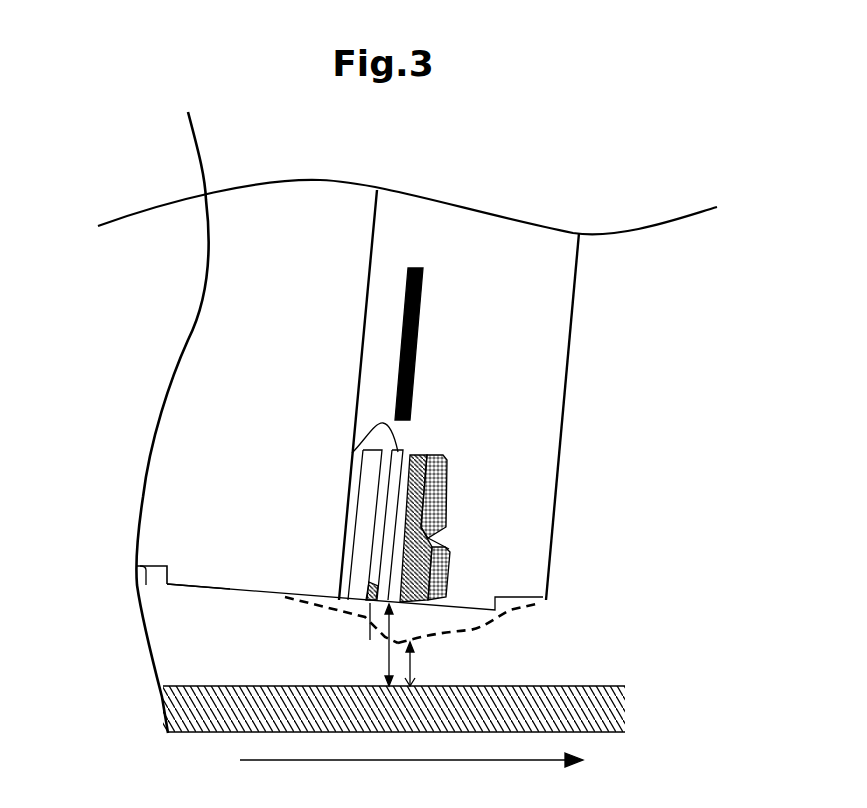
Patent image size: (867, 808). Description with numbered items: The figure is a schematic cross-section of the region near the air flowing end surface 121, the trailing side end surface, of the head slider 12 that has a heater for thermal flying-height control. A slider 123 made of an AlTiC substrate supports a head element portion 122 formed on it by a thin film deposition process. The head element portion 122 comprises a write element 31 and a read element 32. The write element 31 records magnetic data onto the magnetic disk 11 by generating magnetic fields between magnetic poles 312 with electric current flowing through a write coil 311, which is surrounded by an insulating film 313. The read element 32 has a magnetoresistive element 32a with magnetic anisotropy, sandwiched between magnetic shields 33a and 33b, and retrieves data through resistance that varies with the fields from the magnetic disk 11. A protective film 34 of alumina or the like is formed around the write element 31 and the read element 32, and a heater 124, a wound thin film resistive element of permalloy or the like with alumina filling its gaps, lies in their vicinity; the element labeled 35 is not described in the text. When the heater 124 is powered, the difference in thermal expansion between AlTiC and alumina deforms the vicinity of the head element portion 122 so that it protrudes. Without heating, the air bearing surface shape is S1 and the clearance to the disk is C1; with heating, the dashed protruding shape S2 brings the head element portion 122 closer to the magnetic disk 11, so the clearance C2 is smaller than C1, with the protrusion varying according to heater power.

The magnetic disk 11 is at (565, 685).
The head slider 12 is at (441, 182).
The air flowing end surface 121 is at (577, 307).
The head element portion 122 is at (612, 421).
The slider 123 is at (136, 579).
The heater 124 is at (413, 355).
The write element 31 is at (549, 528).
The write coil 311 is at (448, 466).
The magnetic poles 312 is at (448, 567).
The insulating film 313 is at (448, 500).
The read element 32 is at (357, 611).
The magnetoresistive element 32a is at (370, 640).
The magnetic shield 33a is at (352, 453).
The magnetic shield 33b is at (359, 470).
The protective film 34 is at (384, 260).
The bottom surface 35 is at (198, 594).
The ABS shape in non-heating S1 is at (323, 598).
The protruding shape in heating S2 is at (473, 632).
The clearance in non-heating C1 is at (374, 645).
The clearance in heating C2 is at (428, 664).